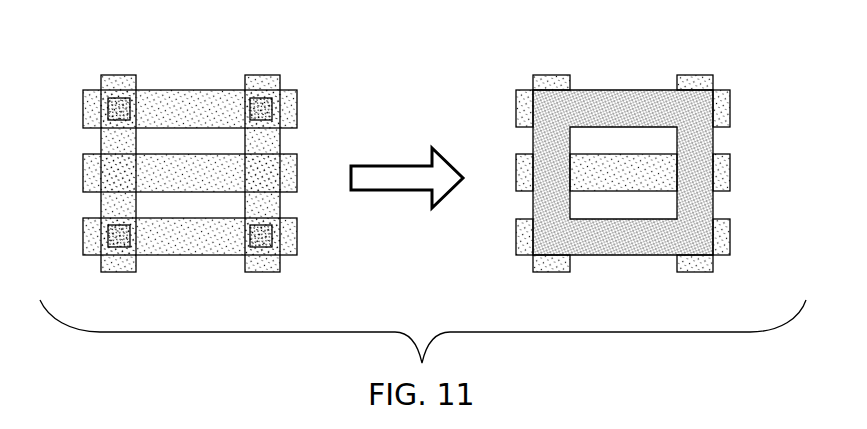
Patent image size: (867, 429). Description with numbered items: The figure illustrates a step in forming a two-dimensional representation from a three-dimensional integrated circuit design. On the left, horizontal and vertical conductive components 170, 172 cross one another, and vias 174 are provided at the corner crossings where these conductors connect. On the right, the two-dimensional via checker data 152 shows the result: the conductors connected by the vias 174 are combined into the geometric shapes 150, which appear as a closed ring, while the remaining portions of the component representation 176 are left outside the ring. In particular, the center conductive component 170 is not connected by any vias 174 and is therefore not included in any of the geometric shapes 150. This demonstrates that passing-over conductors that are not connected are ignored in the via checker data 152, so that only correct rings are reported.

The center conductive component 170 is at (85, 224).
The conductive component 172 is at (262, 75).
The vias 174 is at (249, 237).
The geometric shapes 150 is at (624, 90).
The component representation 176 is at (551, 75).
The 2D via checker data 152 is at (677, 148).